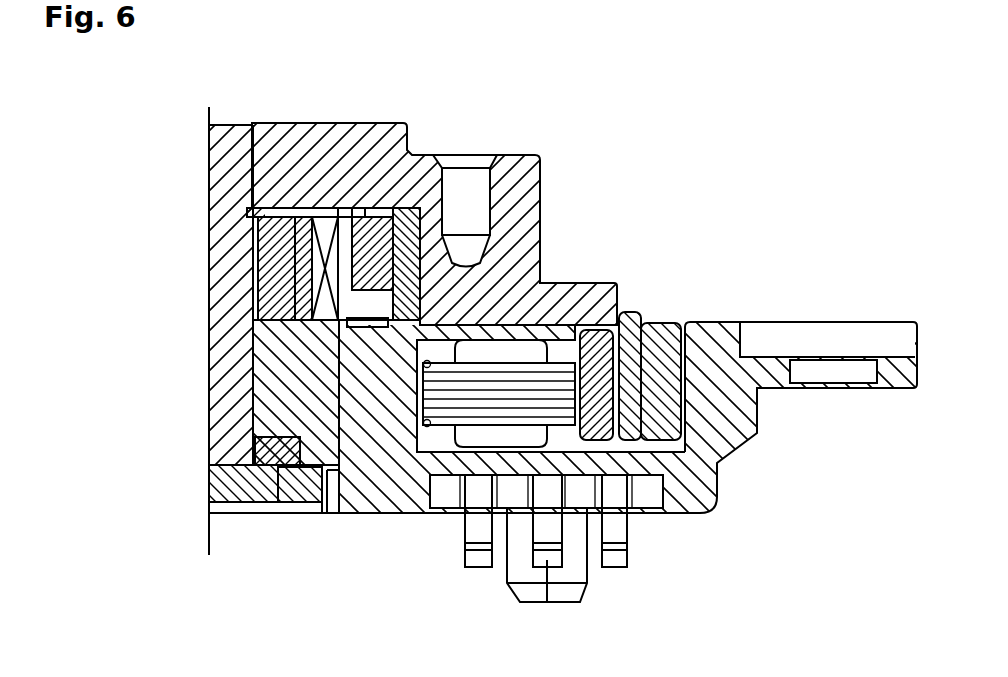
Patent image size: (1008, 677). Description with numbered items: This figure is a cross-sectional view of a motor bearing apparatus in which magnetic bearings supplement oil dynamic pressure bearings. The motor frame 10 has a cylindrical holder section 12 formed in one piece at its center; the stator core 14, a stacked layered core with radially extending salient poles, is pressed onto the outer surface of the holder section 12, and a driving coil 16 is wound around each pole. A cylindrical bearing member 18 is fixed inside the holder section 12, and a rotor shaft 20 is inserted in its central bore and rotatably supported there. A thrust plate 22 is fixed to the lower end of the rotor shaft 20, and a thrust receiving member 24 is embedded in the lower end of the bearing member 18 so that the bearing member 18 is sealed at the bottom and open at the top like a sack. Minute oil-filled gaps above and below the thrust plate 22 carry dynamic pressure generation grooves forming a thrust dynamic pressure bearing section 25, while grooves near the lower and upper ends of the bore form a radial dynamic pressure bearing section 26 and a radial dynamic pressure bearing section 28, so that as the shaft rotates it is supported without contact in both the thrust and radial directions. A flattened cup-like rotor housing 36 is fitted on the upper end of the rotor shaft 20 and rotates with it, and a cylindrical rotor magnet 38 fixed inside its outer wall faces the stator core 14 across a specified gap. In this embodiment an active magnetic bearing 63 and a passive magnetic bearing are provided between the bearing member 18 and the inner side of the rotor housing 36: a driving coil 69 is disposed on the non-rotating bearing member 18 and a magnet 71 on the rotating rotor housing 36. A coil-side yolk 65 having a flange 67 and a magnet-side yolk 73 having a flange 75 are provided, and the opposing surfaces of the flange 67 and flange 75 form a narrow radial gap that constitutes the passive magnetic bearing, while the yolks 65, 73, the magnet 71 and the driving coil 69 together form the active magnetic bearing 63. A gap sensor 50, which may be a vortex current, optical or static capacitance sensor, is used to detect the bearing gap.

The frame 10 is at (693, 486).
The holder section 12 is at (393, 400).
The stator core 14 is at (537, 367).
The driving coil 16 is at (503, 353).
The bearing member 18 is at (253, 432).
The rotor shaft 20 is at (215, 148).
The thrust plate 22 is at (280, 410).
The thrust receiving member 24 is at (300, 490).
The thrust dynamic pressure bearing section 25 is at (272, 472).
The radial dynamic pressure bearing section 26 is at (217, 465).
The radial dynamic pressure bearing section 28 is at (252, 302).
The rotor housing 36 is at (520, 188).
The rotor magnet 38 is at (633, 323).
The gap sensor 50 is at (290, 257).
The active magnetic bearing 63 is at (284, 276).
The coil-side yolk 65 is at (305, 253).
The flange 67 is at (323, 335).
The driving coil 69 is at (408, 153).
The magnet 71 is at (478, 152).
The magnet-side yolk 73 is at (409, 270).
The flange 75 is at (280, 396).